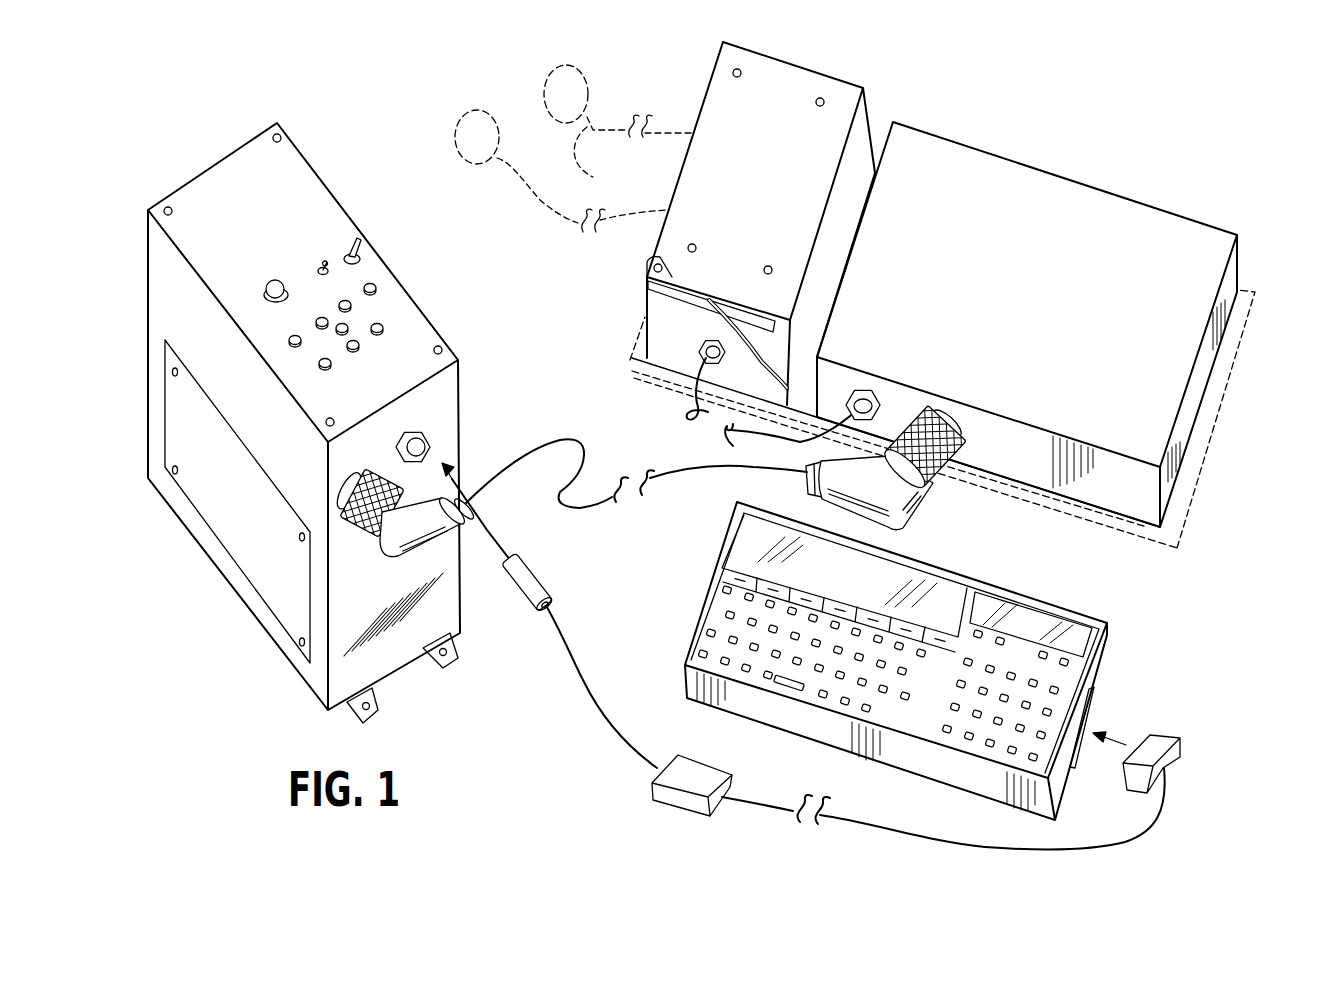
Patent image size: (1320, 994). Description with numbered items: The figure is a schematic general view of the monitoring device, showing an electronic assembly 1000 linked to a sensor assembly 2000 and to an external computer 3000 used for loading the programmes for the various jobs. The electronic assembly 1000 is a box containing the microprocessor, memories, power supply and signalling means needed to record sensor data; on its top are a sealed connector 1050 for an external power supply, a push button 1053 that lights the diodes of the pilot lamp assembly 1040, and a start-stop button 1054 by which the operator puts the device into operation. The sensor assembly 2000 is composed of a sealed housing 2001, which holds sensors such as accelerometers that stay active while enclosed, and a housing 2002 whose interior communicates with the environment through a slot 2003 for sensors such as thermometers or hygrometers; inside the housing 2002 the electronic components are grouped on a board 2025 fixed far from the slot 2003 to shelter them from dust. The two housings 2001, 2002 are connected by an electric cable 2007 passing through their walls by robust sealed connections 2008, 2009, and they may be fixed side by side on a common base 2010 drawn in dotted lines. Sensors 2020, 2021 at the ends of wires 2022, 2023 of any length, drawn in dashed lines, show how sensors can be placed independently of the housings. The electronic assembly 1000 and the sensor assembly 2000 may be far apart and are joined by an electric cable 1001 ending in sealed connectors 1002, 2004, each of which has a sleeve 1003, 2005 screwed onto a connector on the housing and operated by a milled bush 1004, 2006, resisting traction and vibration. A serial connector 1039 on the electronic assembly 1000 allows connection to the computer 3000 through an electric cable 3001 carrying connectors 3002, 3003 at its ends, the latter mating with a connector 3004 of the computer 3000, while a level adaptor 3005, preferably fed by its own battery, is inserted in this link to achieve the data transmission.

The electronic assembly 1000 is at (345, 204).
The electric cable 1001 is at (562, 437).
The connector 1002 is at (427, 543).
The sleeve 1003 is at (338, 482).
The milled bush 1004 is at (362, 520).
The connector 1039 is at (430, 438).
The pilot lamp assembly 1040 is at (370, 312).
The connector 1050 is at (273, 288).
The push button 1053 is at (322, 259).
The start-stop button 1054 is at (359, 229).
The sensor assembly 2000 is at (920, 105).
The sealed housing 2001 is at (1060, 228).
The housing 2002 is at (783, 108).
The slot 2003 is at (633, 357).
The connector 2004 is at (897, 508).
The sleeve 2005 is at (948, 422).
The milled bush 2006 is at (960, 458).
The electric cable 2007 is at (688, 403).
The sealed connection 2008 is at (873, 397).
The sealed connection 2009 is at (714, 358).
The base 2010 is at (1217, 382).
The sensor 2020 is at (472, 135).
The sensor 2021 is at (572, 83).
The wire 2022 is at (518, 170).
The wire 2023 is at (633, 154).
The board 2025 is at (740, 307).
The external computer 3000 is at (1046, 592).
The electric cable 3001 is at (563, 633).
The connector 3002 is at (525, 578).
The connector 3003 is at (1180, 747).
The connector 3004 is at (1092, 707).
The level adaptor 3005 is at (693, 775).